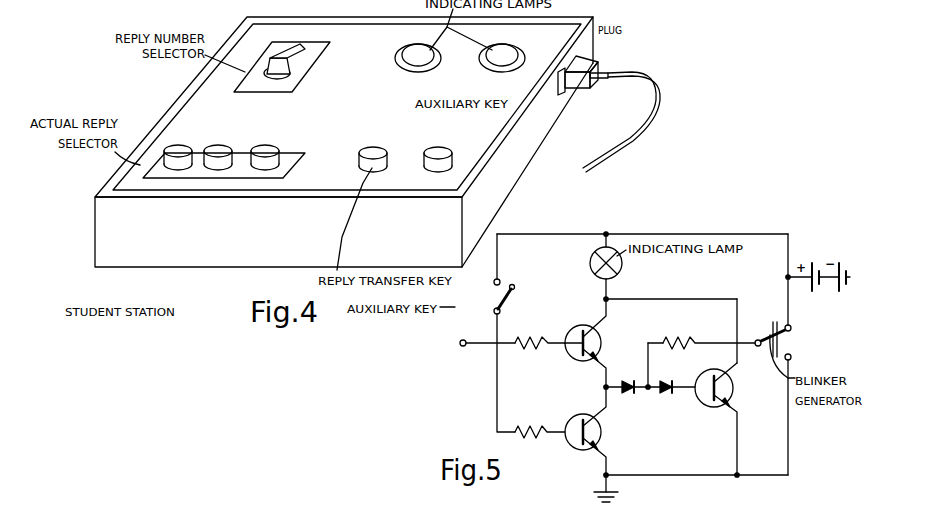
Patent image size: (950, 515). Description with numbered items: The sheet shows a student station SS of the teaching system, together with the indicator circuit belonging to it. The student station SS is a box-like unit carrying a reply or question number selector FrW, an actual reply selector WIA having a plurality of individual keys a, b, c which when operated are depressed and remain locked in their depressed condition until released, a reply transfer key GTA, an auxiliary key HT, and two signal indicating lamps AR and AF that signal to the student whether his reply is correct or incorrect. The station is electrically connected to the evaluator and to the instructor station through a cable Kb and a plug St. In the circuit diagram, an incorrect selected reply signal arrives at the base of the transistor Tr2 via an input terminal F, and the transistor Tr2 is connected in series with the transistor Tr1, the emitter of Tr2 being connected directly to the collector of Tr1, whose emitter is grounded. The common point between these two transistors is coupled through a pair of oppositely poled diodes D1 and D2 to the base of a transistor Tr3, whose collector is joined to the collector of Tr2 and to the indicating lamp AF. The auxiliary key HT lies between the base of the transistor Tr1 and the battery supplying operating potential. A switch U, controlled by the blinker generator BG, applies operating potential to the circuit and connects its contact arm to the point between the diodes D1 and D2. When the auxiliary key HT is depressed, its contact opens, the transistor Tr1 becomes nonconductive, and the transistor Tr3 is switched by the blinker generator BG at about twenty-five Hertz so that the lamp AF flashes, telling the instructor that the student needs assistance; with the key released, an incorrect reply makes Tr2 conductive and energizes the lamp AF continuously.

In FIG. 4, the reply number selector FrW is at (292, 72).
In FIG. 4, the signal indicating lamp AR is at (404, 55).
In FIG. 4, the signal indicating lamp AF is at (490, 55).
In FIG. 5, the signal indicating lamp AF is at (621, 268).
In FIG. 4, the plug St is at (580, 63).
In FIG. 4, the cable Kb is at (645, 85).
In FIG. 4, the key a is at (178, 147).
In FIG. 4, the key b is at (218, 147).
In FIG. 4, the key c is at (265, 147).
In FIG. 4, the actual reply selector WIA is at (239, 170).
In FIG. 4, the reply transfer key GTA is at (372, 149).
In FIG. 4, the auxiliary key HT is at (438, 149).
In FIG. 5, the auxiliary key HT is at (496, 297).
In FIG. 4, the student station SS is at (145, 258).
In FIG. 5, the input terminal F is at (501, 346).
In FIG. 5, the transistor Tr1 is at (602, 430).
In FIG. 5, the transistor Tr2 is at (578, 328).
In FIG. 5, the transistor Tr3 is at (707, 405).
In FIG. 5, the diode D1 is at (631, 380).
In FIG. 5, the diode D2 is at (663, 382).
In FIG. 5, the blinker generator BG is at (768, 335).
In FIG. 5, the switch U is at (814, 366).